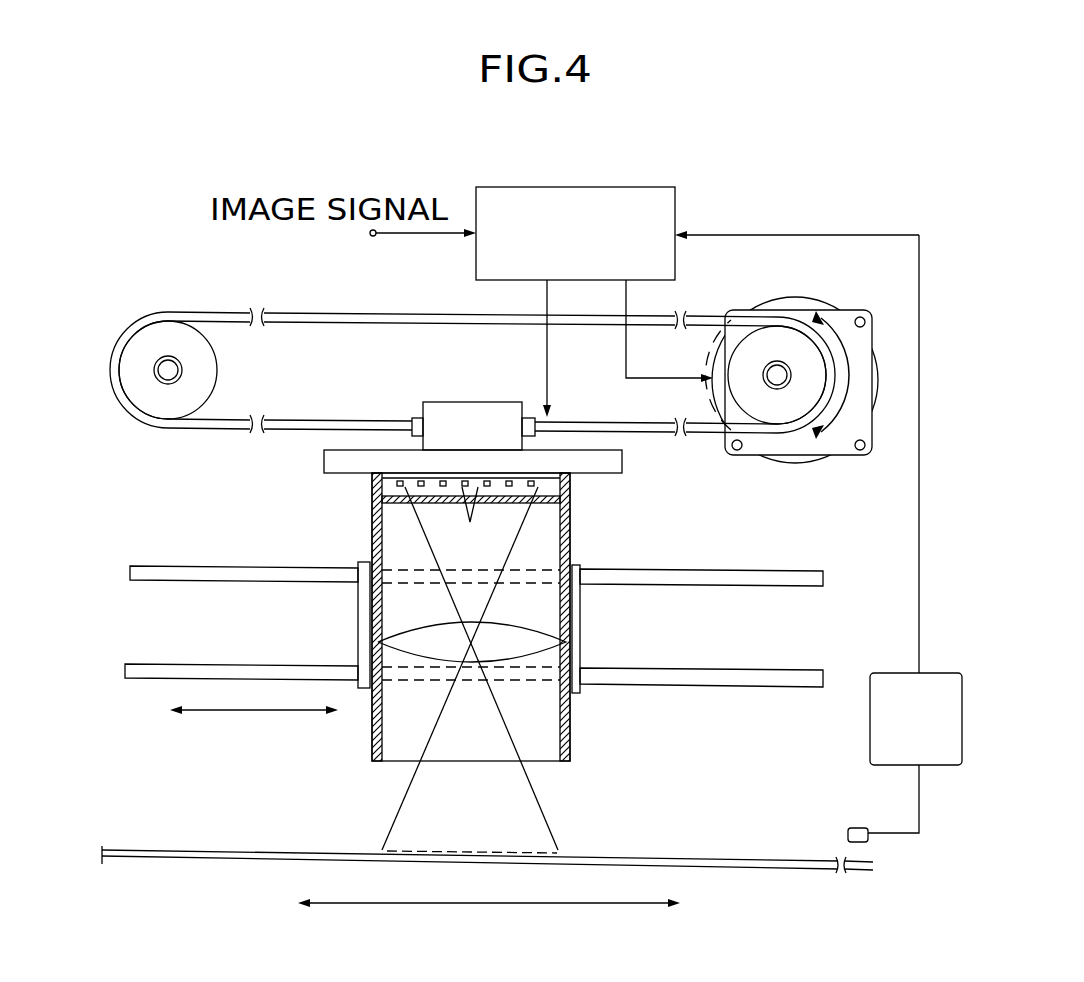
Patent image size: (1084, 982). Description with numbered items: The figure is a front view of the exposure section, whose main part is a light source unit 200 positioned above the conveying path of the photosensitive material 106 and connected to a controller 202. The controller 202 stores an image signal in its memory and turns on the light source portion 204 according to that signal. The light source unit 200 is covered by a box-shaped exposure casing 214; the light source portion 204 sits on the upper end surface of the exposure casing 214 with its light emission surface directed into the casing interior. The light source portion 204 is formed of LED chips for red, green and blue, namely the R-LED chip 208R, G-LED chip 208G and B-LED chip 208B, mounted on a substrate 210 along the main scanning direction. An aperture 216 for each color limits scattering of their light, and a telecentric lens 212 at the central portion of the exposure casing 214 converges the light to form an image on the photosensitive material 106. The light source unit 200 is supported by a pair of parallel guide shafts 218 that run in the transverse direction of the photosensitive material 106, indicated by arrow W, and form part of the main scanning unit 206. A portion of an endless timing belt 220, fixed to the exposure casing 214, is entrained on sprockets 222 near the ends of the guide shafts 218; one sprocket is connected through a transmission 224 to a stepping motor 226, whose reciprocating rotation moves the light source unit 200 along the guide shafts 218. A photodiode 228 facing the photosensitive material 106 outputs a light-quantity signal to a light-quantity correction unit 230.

The photosensitive material 106 is at (745, 860).
The light source unit 200 is at (491, 650).
The controller 202 is at (680, 210).
The light source portion 204 is at (385, 487).
The main scanning unit 206 is at (194, 446).
The R-LED chip 208R is at (422, 488).
The G-LED chip 208G is at (481, 523).
The B-LED chip 208B is at (548, 488).
The substrate 210 is at (570, 490).
The telecentric lens 212 is at (425, 650).
The exposure casing 214 is at (571, 727).
The aperture 216 is at (372, 518).
The guide shafts 218 is at (725, 668).
The timing belt 220 is at (350, 418).
The sprockets 222 is at (212, 370).
The transmission 224 is at (823, 447).
The stepping motor 226 is at (793, 463).
The photodiode 228 is at (870, 842).
The light-quantity correction unit 230 is at (900, 766).
The arrow W is at (460, 905).